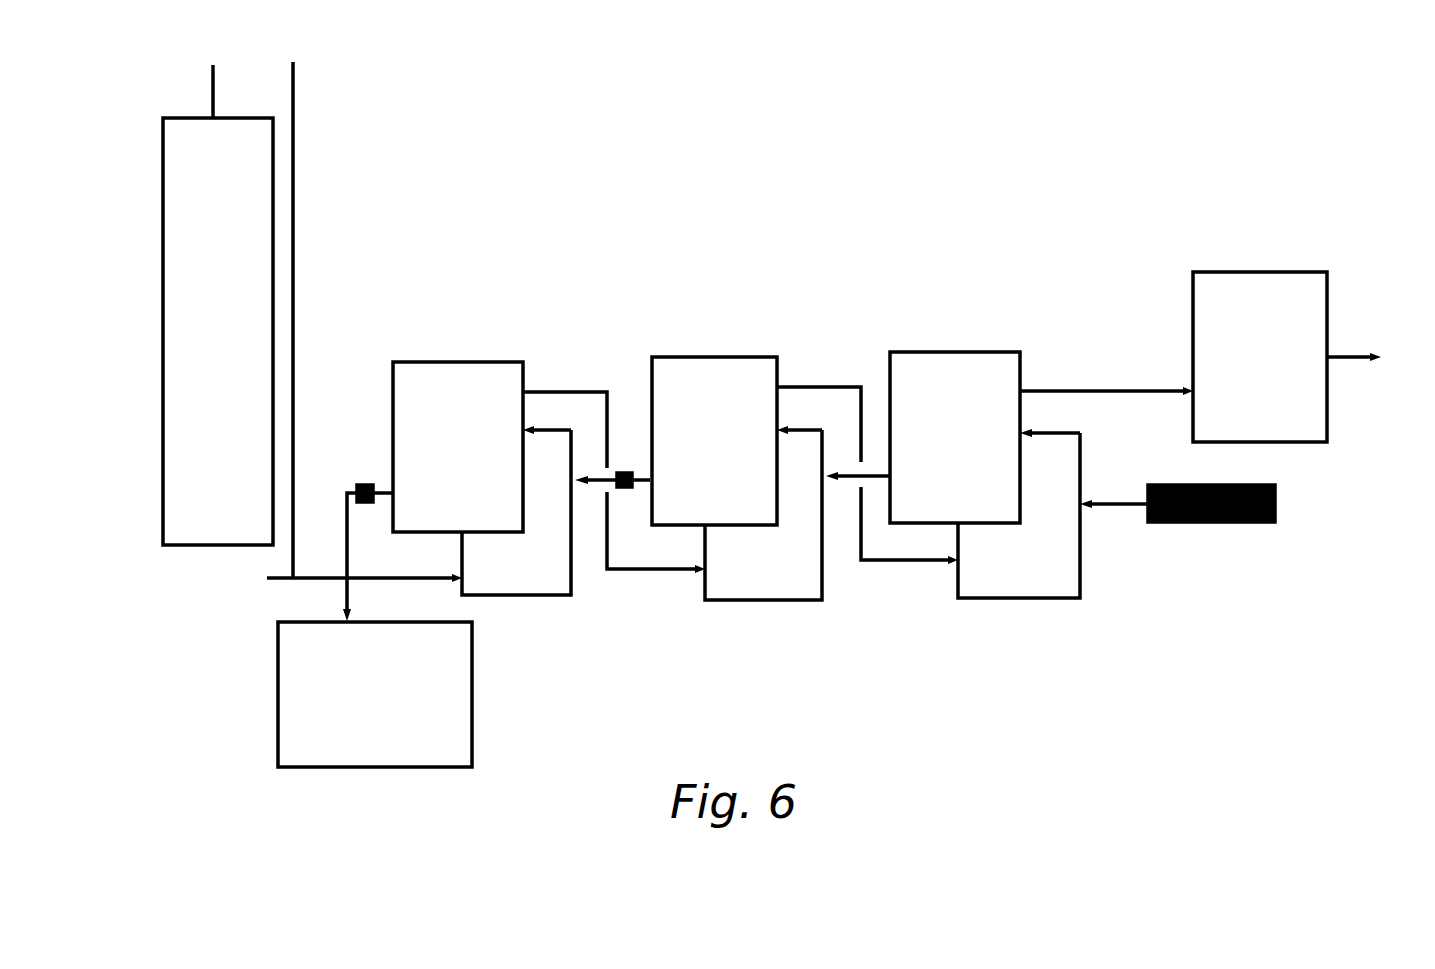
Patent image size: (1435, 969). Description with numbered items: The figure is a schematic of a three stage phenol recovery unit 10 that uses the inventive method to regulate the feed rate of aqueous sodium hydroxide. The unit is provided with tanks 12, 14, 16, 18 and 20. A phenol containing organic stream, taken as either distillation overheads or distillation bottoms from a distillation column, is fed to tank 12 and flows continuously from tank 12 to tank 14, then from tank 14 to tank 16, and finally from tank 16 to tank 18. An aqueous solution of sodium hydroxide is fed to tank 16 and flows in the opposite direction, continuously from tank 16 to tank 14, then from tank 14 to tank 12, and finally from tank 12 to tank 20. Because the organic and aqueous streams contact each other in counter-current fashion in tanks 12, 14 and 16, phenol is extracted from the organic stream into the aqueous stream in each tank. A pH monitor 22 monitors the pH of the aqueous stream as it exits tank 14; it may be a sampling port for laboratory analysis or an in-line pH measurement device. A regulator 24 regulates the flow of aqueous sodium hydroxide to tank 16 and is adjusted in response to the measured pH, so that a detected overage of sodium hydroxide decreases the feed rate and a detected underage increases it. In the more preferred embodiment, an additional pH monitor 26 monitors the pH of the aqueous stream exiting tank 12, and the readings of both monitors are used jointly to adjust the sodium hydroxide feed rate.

The three stage phenol recovery unit 10 is at (838, 186).
The tank 12 is at (549, 478).
The tank 14 is at (805, 478).
The tank 16 is at (1009, 475).
The tank 18 is at (1287, 357).
The tank 20 is at (375, 694).
The pH monitor 22 is at (622, 474).
The regulator 24 is at (1249, 529).
The pH monitor 26 is at (362, 486).